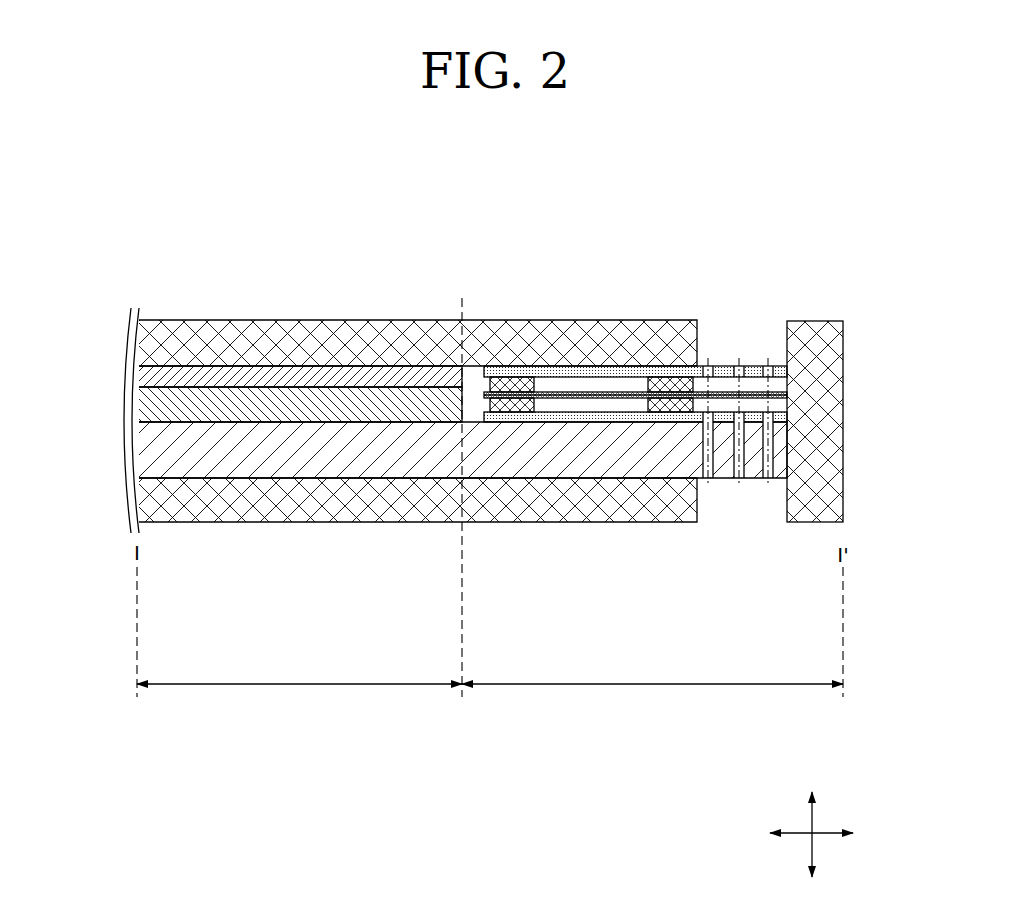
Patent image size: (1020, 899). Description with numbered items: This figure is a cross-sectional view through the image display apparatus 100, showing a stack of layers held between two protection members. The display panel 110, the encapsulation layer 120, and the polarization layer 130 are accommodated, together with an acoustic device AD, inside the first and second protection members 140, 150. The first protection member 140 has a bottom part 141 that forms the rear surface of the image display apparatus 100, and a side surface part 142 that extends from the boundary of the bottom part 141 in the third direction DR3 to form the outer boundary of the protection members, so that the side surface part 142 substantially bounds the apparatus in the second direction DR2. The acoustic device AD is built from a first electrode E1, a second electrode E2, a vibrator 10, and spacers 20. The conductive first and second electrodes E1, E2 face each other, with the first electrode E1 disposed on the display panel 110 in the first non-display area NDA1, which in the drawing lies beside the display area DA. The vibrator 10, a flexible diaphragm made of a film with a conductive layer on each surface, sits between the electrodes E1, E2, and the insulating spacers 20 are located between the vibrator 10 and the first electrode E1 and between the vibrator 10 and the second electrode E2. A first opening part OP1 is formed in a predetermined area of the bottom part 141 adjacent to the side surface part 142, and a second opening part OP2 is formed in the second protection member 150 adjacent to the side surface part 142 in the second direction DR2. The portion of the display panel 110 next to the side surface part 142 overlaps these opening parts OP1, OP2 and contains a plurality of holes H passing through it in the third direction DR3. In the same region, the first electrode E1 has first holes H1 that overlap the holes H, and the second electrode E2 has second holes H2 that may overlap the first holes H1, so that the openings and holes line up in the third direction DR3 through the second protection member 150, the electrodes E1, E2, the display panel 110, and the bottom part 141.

The image display apparatus 100 is at (721, 200).
The display panel 110 is at (150, 457).
The encapsulation layer 120 is at (156, 408).
The polarization layer 130 is at (148, 379).
The second protection member 150 is at (150, 342).
The first protection member 140 is at (491, 493).
The bottom part 141 is at (661, 512).
The side surface part 142 is at (813, 473).
The vibrator 10 is at (506, 367).
The spacers 20 is at (503, 263).
The first electrode E1 is at (613, 411).
The second electrode E2 is at (562, 368).
The acoustic device AD is at (635, 409).
The holes H is at (774, 451).
The first holes H1 is at (768, 482).
The second holes H2 is at (768, 365).
The first opening part OP1 is at (766, 513).
The second opening part OP2 is at (768, 318).
The display area DA is at (299, 698).
The first non-display area NDA1 is at (652, 698).
The second direction DR2 is at (835, 833).
The third direction DR3 is at (812, 821).